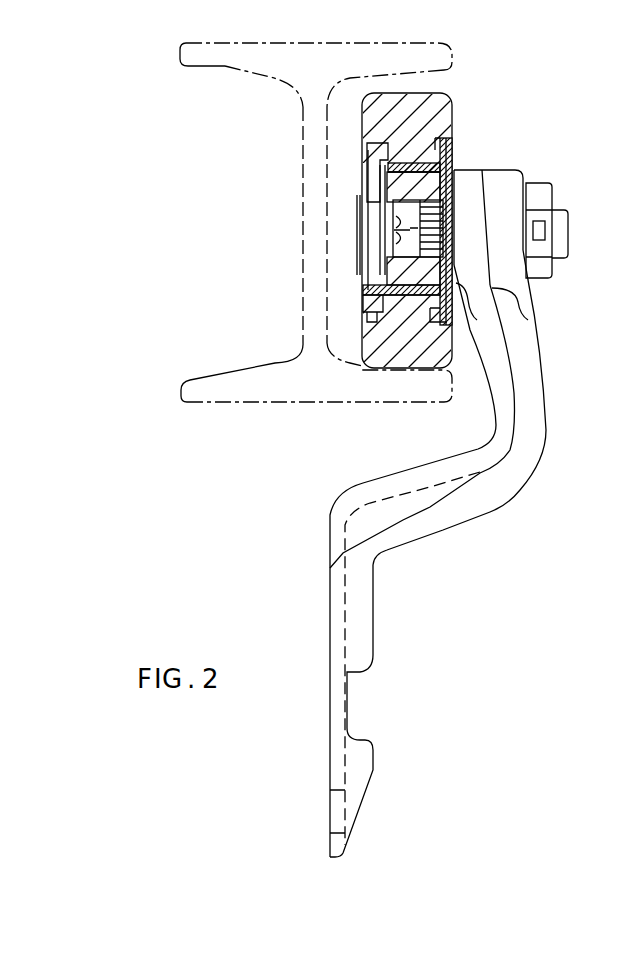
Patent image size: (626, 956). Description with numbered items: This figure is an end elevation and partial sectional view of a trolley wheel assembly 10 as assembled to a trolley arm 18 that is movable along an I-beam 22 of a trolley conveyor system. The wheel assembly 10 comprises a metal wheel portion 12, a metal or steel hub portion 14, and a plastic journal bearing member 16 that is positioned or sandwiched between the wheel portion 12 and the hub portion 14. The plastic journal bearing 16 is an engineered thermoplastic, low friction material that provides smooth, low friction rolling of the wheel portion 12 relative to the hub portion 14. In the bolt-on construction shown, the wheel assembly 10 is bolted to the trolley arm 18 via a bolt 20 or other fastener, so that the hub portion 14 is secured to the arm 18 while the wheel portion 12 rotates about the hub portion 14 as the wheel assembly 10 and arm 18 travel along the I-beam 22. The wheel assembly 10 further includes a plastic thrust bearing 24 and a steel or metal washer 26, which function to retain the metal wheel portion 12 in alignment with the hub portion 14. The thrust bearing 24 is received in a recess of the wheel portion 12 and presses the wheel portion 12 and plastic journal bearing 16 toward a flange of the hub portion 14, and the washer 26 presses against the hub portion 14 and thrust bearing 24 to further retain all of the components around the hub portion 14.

The trolley wheel assembly 10 is at (420, 452).
The wheel portion 12 is at (430, 94).
The hub portion 14 is at (378, 180).
The plastic journal bearing member 16 is at (440, 124).
The trolley arm 18 is at (545, 400).
The bolt 20 is at (560, 212).
The I-beam 22 is at (288, 83).
The plastic thrust bearing 24 is at (453, 143).
The washer 26 is at (477, 320).